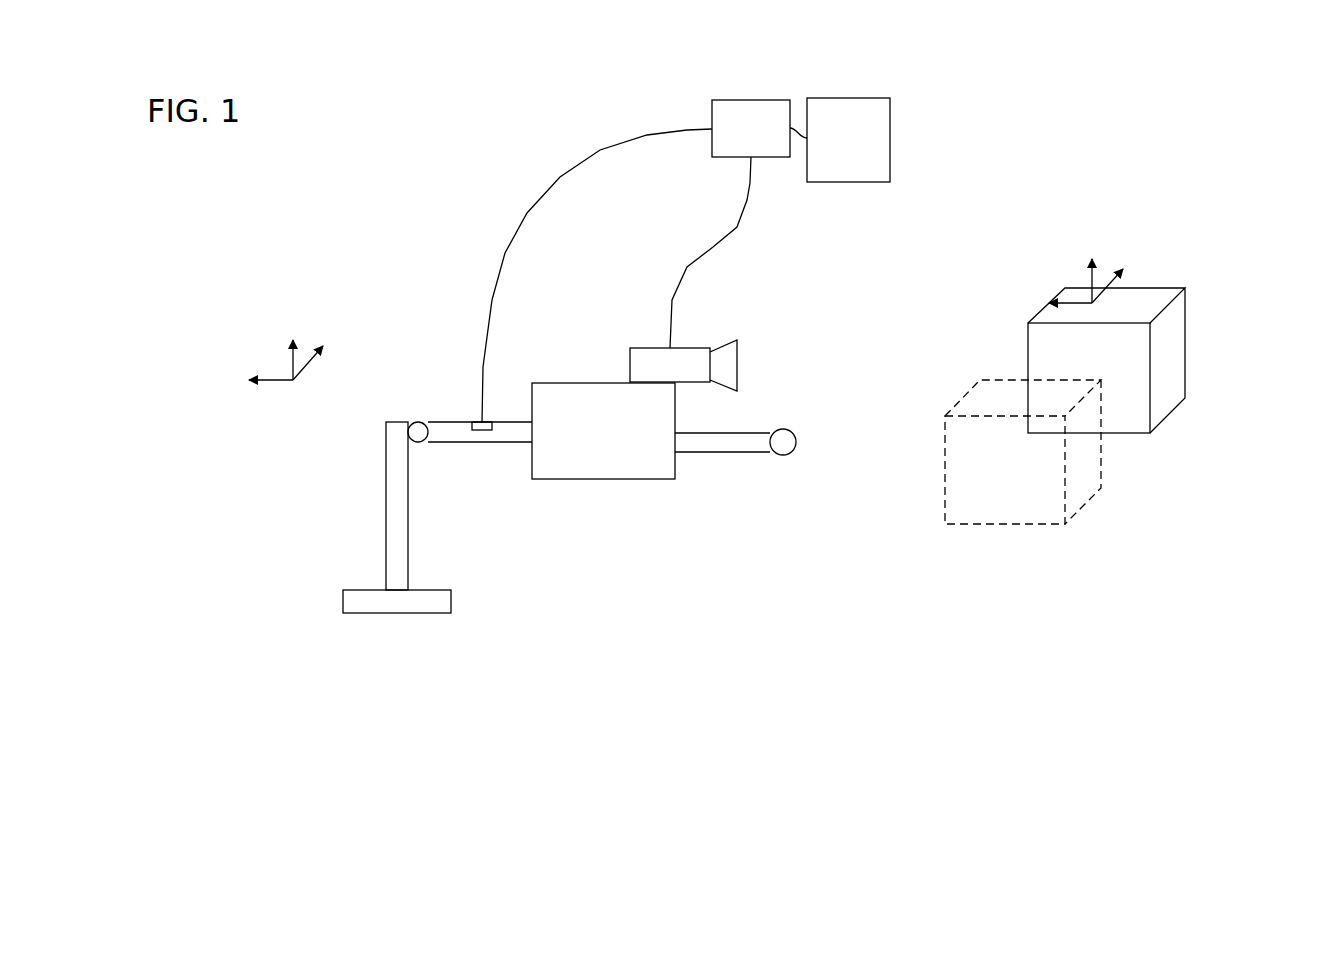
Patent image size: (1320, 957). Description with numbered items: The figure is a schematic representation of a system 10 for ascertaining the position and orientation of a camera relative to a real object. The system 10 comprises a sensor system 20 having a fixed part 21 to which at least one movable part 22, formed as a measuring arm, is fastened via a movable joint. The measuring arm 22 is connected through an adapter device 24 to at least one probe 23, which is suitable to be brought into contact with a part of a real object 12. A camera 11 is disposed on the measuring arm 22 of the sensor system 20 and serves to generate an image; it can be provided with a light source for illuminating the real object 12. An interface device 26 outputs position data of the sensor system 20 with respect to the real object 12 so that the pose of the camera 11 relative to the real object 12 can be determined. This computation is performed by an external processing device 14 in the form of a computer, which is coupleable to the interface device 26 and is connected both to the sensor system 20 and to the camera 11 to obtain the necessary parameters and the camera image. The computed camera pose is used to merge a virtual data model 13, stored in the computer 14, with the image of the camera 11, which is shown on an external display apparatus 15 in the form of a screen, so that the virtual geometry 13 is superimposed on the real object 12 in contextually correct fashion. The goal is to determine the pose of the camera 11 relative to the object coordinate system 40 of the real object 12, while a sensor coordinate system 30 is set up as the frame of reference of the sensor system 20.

The system 10 is at (1046, 147).
The camera 11 is at (693, 348).
The real object 12 is at (1186, 337).
The virtual data model 13 is at (1101, 470).
The external processing device 14 is at (748, 100).
The external display apparatus 15 is at (855, 98).
The sensor system 20 is at (294, 518).
The fixed part 21 is at (408, 555).
The movable part 22 is at (472, 447).
The probe 23 is at (733, 452).
The adapter device 24 is at (603, 479).
The interface device 26 is at (473, 415).
The sensor coordinate system 30 is at (280, 380).
The object coordinate system 40 is at (1082, 295).